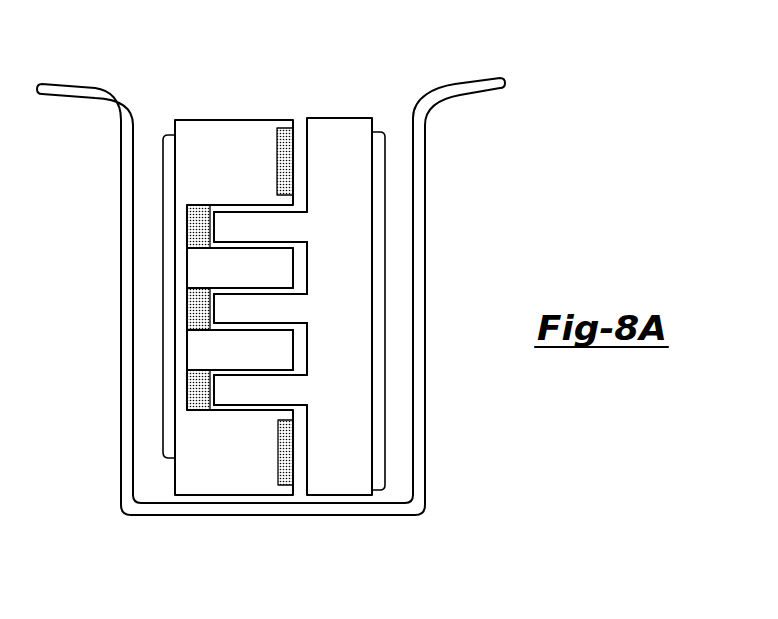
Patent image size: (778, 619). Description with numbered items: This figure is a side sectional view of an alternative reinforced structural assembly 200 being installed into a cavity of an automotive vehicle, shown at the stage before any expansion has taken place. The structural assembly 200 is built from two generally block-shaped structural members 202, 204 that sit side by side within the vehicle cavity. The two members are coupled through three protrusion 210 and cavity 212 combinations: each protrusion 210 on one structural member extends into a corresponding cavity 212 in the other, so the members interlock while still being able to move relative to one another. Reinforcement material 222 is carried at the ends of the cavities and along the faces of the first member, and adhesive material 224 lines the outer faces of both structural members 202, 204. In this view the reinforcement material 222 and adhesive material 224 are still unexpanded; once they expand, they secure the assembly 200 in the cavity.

The structural assembly 200 is at (153, 75).
The structural member 202 is at (243, 135).
The structural member 204 is at (360, 184).
The protrusion 210 is at (285, 225).
The cavity 212 is at (268, 250).
The reinforcement material 222 is at (197, 412).
The adhesive material 224 is at (168, 390).